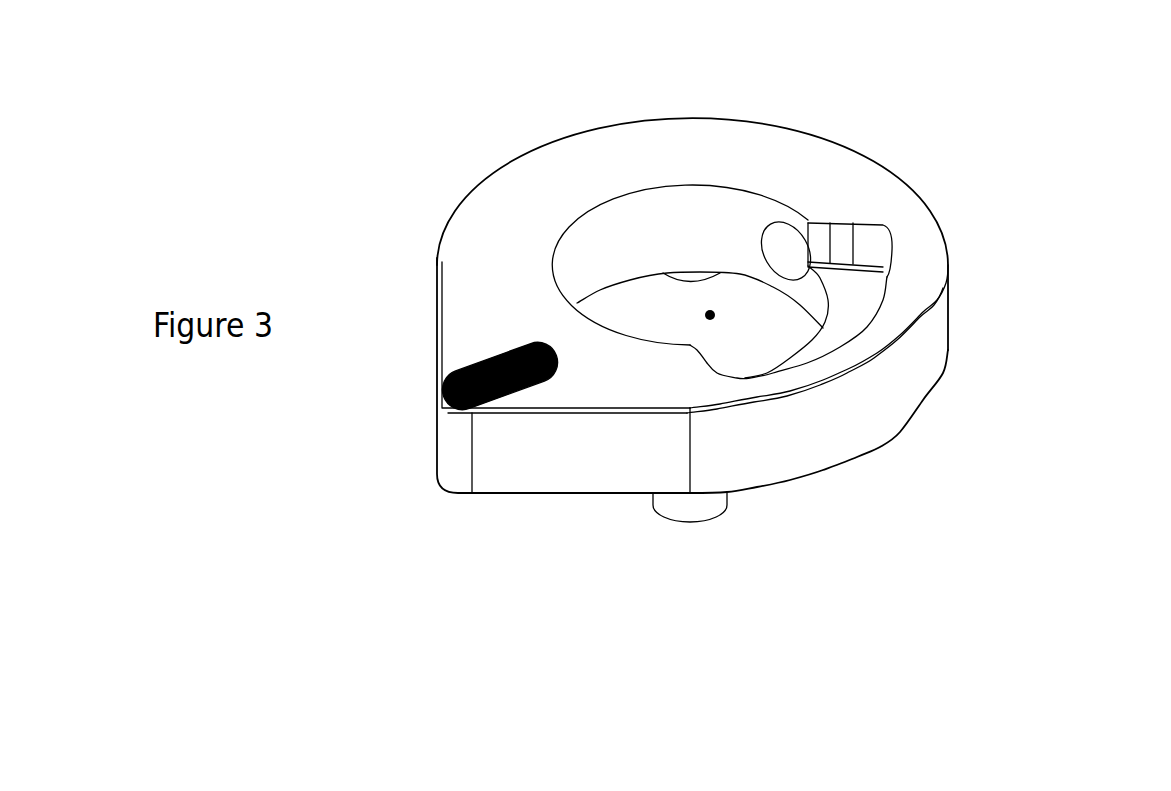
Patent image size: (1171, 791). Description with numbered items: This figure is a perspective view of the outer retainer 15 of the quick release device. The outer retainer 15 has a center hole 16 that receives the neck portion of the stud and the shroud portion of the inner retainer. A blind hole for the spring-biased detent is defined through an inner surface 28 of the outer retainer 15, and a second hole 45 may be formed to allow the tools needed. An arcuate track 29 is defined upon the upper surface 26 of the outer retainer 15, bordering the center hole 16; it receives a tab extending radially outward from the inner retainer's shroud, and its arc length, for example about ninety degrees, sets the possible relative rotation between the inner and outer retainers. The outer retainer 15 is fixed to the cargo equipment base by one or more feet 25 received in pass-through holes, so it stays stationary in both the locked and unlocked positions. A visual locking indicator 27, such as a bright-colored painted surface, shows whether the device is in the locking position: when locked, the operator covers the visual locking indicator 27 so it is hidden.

The outer retainer 15 is at (890, 392).
The center hole 16 is at (714, 319).
The feet 25 is at (688, 507).
The upper surface 26 is at (893, 325).
The visual locking indicator 27 is at (495, 370).
The inner surface 28 is at (647, 232).
The arcuate track 29 is at (860, 292).
The second hole 45 is at (797, 252).